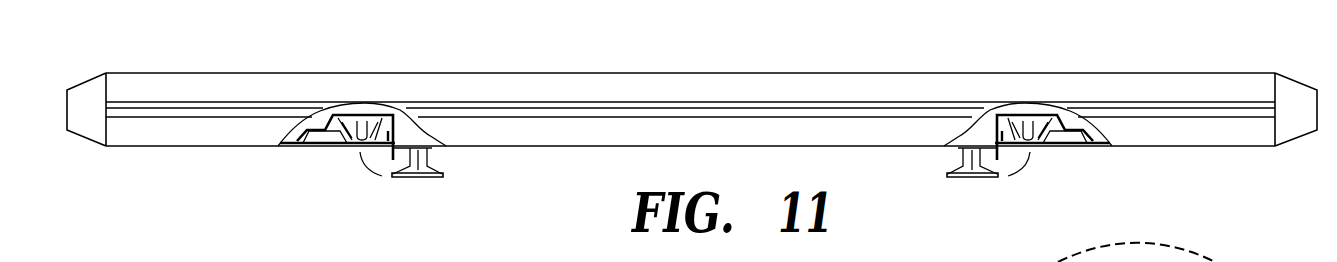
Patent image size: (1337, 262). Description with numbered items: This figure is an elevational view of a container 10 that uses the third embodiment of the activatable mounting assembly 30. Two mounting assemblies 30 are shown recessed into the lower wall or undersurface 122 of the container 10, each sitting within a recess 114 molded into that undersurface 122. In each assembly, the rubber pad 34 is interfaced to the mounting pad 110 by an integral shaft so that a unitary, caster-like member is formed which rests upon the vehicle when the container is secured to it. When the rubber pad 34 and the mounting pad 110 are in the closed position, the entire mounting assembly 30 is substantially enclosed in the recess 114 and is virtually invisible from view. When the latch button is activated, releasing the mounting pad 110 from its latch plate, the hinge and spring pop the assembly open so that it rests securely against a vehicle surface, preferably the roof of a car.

The container 10 is at (609, 66).
The activatable mounting assembly 30 is at (318, 157).
The rubber pad 34 is at (418, 177).
The mounting pad 110 is at (437, 148).
The recess 114 is at (316, 118).
The undersurface 122 is at (597, 147).